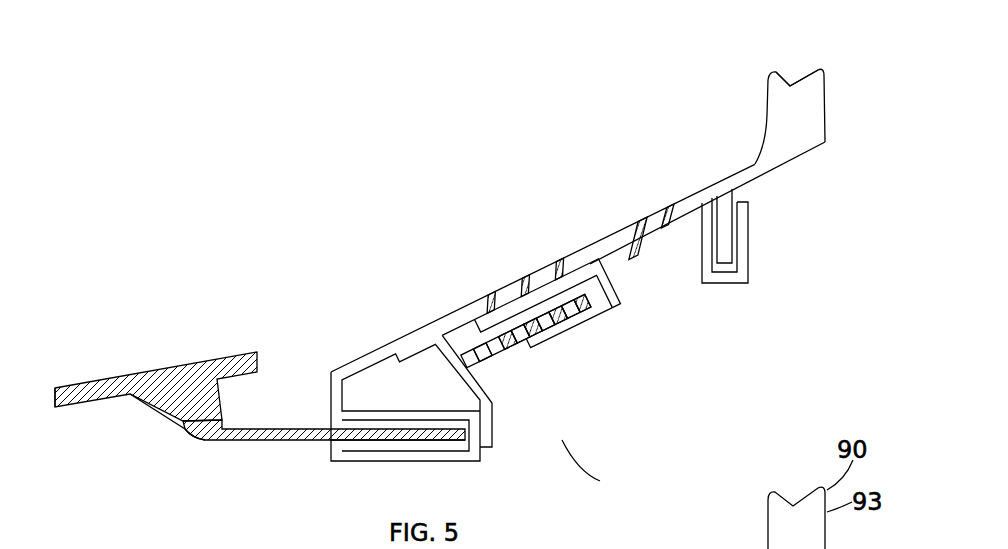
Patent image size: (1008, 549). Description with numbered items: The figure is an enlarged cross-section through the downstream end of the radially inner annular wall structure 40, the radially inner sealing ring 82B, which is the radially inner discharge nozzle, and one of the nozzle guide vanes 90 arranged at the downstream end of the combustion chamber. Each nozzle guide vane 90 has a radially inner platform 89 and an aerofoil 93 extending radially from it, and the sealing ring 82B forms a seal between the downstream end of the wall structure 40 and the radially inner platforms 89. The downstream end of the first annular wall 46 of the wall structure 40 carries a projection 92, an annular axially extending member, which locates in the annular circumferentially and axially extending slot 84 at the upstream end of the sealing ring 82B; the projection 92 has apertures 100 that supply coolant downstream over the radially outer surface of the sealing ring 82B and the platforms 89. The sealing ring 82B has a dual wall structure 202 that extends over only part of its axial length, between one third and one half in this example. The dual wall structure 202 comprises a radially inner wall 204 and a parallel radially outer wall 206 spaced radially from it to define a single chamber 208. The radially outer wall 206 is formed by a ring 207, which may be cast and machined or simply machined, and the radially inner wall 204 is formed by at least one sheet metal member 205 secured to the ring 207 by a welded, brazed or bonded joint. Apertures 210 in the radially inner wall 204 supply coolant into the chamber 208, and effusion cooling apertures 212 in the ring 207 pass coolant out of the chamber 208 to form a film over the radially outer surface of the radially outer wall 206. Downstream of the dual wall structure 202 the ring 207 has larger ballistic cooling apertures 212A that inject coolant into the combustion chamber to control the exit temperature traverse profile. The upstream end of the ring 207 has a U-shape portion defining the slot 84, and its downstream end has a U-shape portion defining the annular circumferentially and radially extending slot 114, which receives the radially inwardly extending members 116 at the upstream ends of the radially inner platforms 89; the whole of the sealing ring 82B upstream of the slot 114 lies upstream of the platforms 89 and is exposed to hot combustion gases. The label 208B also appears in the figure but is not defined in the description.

The radially inner annular wall structure 40 is at (130, 394).
The first annular wall 46 is at (78, 407).
The radially inner sealing ring 82B is at (562, 437).
The slot 84 is at (403, 448).
The radially inner platform 89 is at (810, 147).
The nozzle guide vane 90 is at (810, 92).
The projection 92 is at (287, 441).
The aerofoil 93 is at (826, 96).
The apertures 100 is at (188, 408).
The slot 114 is at (713, 246).
The radially inwardly extending members 116 is at (723, 222).
The dual wall structure 202 is at (592, 338).
The radially inner wall 204 is at (545, 352).
The member 205 is at (455, 380).
The radially outer wall 206 is at (445, 318).
The ring 207 is at (347, 362).
The chamber 208 is at (528, 317).
The plate 208B is at (708, 548).
The apertures 210 is at (617, 305).
The effusion cooling apertures 212 is at (540, 275).
The ballistic cooling apertures 212A is at (668, 207).